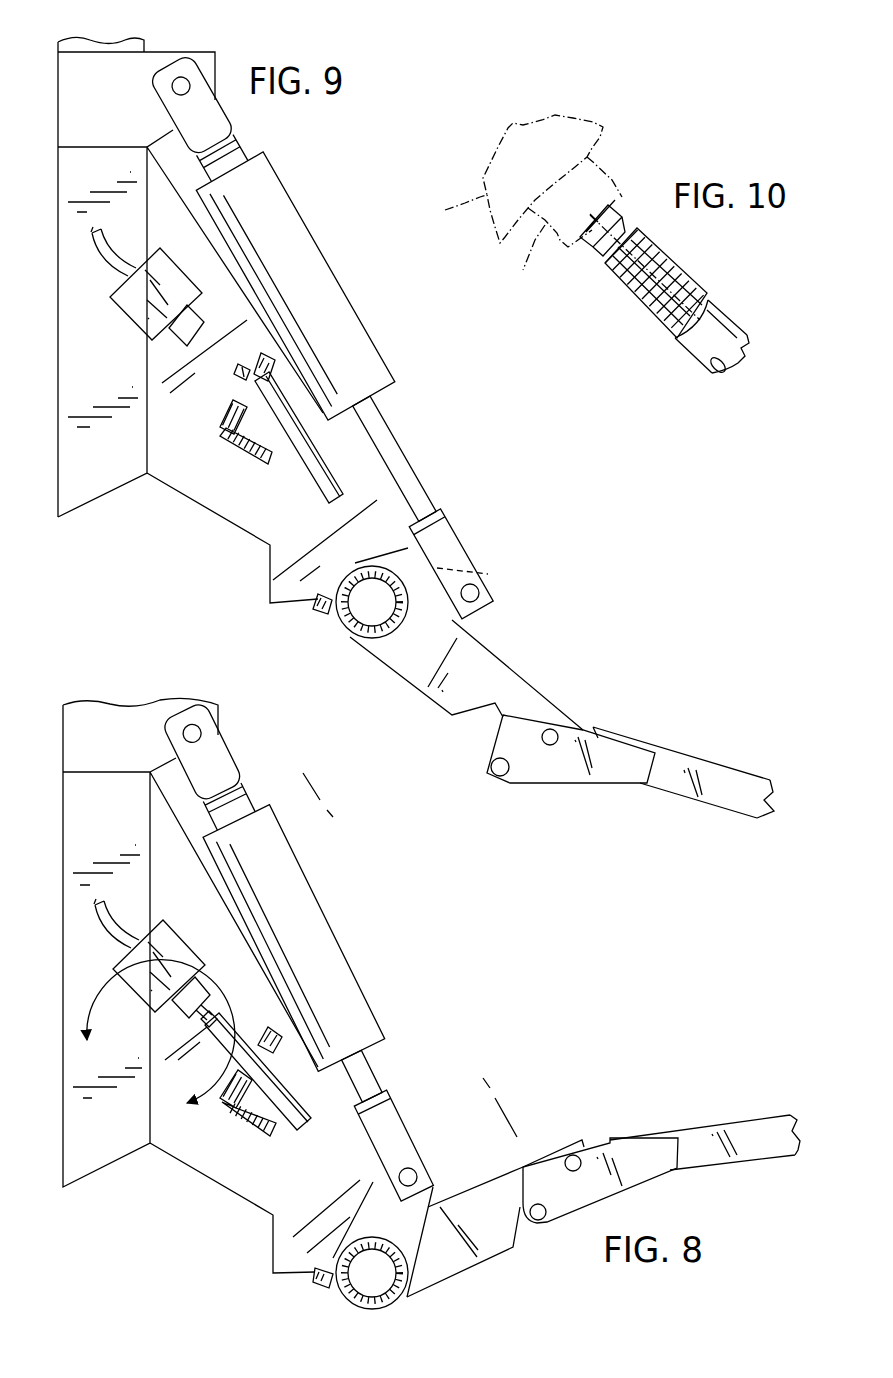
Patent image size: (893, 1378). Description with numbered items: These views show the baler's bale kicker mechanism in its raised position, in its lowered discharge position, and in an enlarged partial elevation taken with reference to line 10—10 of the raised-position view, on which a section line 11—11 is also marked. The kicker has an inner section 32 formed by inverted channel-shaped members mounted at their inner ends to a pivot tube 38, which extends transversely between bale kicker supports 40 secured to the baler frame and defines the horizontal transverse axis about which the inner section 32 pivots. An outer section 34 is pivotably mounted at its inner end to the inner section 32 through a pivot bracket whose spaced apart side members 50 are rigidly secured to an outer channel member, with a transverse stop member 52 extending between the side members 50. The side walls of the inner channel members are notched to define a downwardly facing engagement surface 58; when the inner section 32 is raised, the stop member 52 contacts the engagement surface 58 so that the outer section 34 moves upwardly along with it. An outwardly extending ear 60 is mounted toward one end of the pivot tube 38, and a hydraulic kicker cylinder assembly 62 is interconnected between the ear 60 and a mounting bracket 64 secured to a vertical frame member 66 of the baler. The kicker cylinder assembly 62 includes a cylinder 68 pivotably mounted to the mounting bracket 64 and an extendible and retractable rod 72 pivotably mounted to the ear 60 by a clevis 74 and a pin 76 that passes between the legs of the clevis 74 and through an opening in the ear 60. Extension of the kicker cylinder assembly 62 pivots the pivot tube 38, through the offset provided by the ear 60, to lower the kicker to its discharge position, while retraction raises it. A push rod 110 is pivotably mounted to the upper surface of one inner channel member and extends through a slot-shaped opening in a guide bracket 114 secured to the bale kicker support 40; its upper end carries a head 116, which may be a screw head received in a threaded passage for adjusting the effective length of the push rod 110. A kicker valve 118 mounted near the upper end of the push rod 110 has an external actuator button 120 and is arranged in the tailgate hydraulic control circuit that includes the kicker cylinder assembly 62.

In FIG. 8, the sensor assembly pivot arrow 10 is at (152, 1048).
In FIG. 8, the section line 11 is at (340, 760).
In FIG. 9, the inner section 32 is at (522, 660).
In FIG. 8, the inner section 32 is at (502, 1167).
In FIG. 9, the outer section 34 is at (739, 756).
In FIG. 8, the outer section 34 is at (738, 1114).
In FIG. 9, the pivot tube 38 is at (355, 633).
In FIG. 8, the pivot tube 38 is at (353, 1297).
In FIG. 9, the bale kicker support 40 is at (178, 494).
In FIG. 8, the bale kicker support 40 is at (211, 993).
In FIG. 9, the side member 50 is at (548, 787).
In FIG. 8, the side member 50 is at (654, 1180).
In FIG. 8, the stop member 52 is at (552, 1221).
In FIG. 8, the engagement surface 58 is at (522, 1208).
In FIG. 9, the ear 60 is at (495, 580).
In FIG. 8, the ear 60 is at (424, 1244).
In FIG. 9, the kicker cylinder assembly 62 is at (312, 216).
In FIG. 9, the mounting bracket 64 is at (177, 50).
In FIG. 8, the mounting bracket 64 is at (209, 766).
In FIG. 9, the vertical frame member 66 is at (57, 178).
In FIG. 8, the cylinder 68 is at (364, 976).
In FIG. 8, the rod 72 is at (375, 1068).
In FIG. 9, the clevis 74 is at (463, 537).
In FIG. 8, the clevis 74 is at (398, 1104).
In FIG. 8, the pin 76 is at (427, 1167).
In FIG. 9, the push rod 110 is at (338, 452).
In FIG. 10, the push rod 110 is at (728, 312).
In FIG. 8, the push rod 110 is at (293, 1125).
In FIG. 9, the guide bracket 114 is at (240, 447).
In FIG. 8, the guide bracket 114 is at (247, 1127).
In FIG. 10, the head 116 is at (622, 203).
In FIG. 9, the kicker valve 118 is at (118, 307).
In FIG. 10, the kicker valve 118 is at (516, 181).
In FIG. 8, the kicker valve 118 is at (135, 950).
In FIG. 10, the actuator button 120 is at (525, 259).